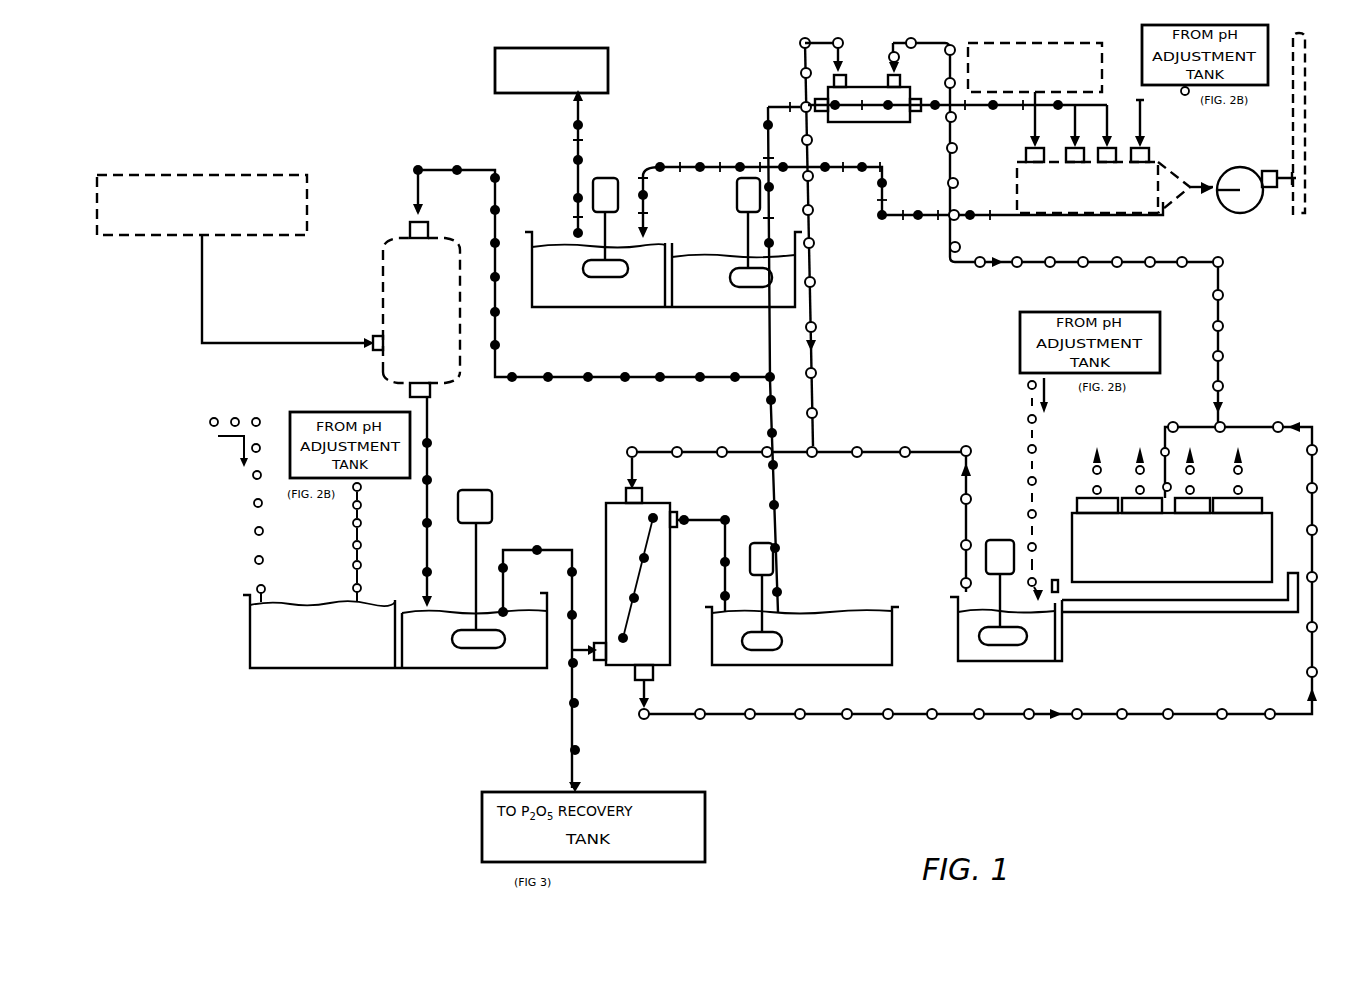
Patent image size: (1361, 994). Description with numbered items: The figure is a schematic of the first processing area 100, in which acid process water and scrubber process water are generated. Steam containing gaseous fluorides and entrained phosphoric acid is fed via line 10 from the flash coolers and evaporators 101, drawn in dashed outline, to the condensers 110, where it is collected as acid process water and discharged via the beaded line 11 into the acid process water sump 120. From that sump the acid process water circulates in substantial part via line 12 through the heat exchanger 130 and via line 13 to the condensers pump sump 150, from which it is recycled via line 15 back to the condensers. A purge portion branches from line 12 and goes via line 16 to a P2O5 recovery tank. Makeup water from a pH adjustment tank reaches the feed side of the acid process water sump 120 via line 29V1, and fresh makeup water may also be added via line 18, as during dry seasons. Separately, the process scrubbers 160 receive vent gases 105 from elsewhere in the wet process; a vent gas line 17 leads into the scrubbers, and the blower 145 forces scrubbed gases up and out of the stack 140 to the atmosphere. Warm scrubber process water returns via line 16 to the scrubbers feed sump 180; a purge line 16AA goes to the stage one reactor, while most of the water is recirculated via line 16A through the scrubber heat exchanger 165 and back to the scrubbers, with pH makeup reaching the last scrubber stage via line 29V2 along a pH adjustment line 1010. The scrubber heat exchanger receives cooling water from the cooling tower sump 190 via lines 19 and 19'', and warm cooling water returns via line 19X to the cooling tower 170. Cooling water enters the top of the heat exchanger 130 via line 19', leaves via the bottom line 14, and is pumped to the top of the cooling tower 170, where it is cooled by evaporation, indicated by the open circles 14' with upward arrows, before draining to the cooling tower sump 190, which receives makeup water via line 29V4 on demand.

The first processing area 100 is at (414, 78).
The flash coolers and evaporators 101 is at (298, 172).
The line 10 is at (202, 320).
The line 15 is at (448, 168).
The condensers 110 is at (383, 276).
The line 11 is at (428, 466).
The line 18 is at (258, 502).
The line 29V1 is at (352, 552).
The acid process water sump 120 is at (522, 668).
The line 12 is at (510, 548).
The line 16 is at (570, 703).
The heat exchanger 130 is at (604, 518).
The line 13 is at (705, 520).
The line 19' is at (681, 426).
The line 19 is at (835, 500).
The line 19'' is at (783, 242).
The line 16A is at (766, 146).
The purge line 16AA is at (575, 152).
The scrubbers feed sump 180 is at (773, 307).
The scrubber heat exchanger 165 is at (870, 87).
The vent gases 105 is at (1122, 33).
The vent gas line to process scrubbers 17 is at (1034, 130).
The process scrubbers 160 is at (1016, 203).
The pH adjustment line to process scrubbers 1010 is at (1190, 116).
The line 29V2 is at (1171, 129).
The blower 145 is at (1220, 170).
The stack 140 is at (1297, 222).
The line 19X is at (1226, 336).
The line 29V4 is at (1028, 418).
The cooling tower sump 190 is at (958, 645).
The cooling tower 170 is at (1072, 513).
The open circles 14' is at (1191, 470).
The line 14 is at (978, 572).
The condensers pump sump 150 is at (826, 666).